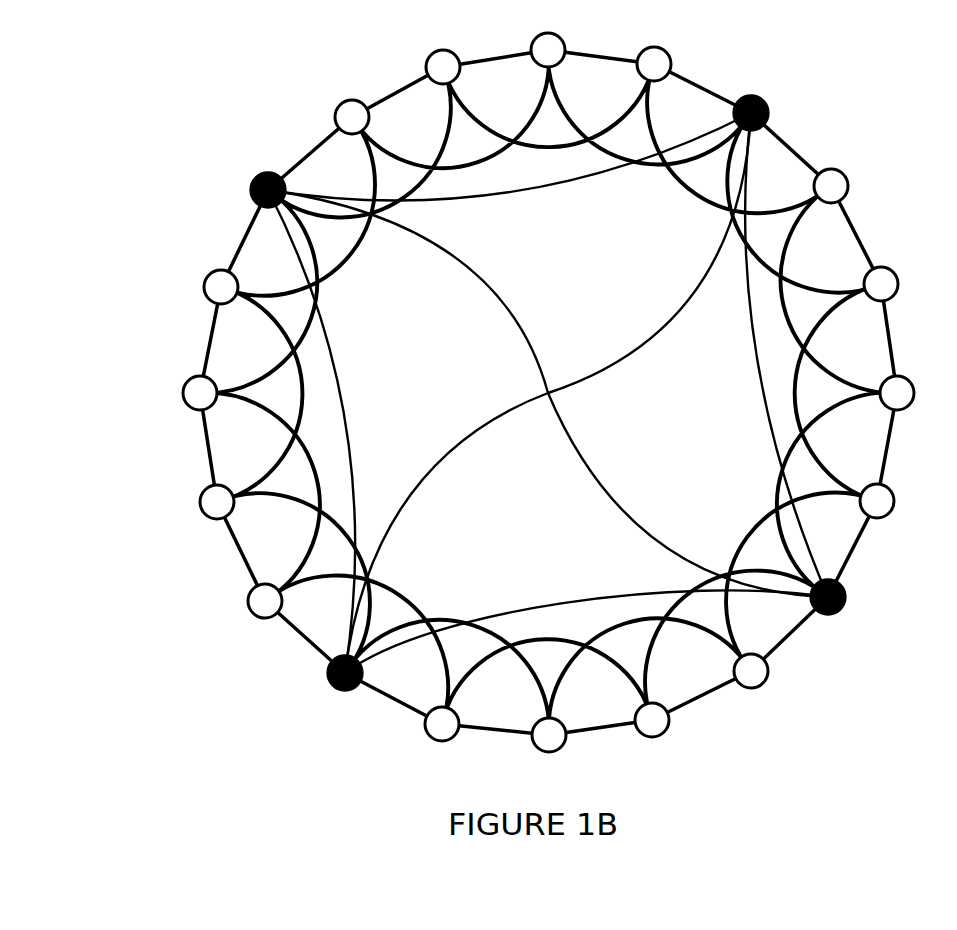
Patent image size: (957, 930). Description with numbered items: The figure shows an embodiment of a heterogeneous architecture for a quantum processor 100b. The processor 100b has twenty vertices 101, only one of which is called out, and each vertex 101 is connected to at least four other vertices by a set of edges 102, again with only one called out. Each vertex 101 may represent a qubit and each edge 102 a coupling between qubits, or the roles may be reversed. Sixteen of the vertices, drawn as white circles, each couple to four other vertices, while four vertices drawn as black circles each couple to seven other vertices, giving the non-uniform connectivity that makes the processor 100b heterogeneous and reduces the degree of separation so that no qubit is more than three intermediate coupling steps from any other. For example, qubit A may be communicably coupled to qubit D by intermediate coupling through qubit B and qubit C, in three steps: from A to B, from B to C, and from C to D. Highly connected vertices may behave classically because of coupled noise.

The heterogeneous quantum processor 100b is at (517, 392).
The vertex 101 is at (194, 395).
The edge 102 is at (313, 468).
The qubit A is at (216, 287).
The qubit B is at (256, 184).
The qubit C is at (766, 110).
The qubit D is at (881, 289).